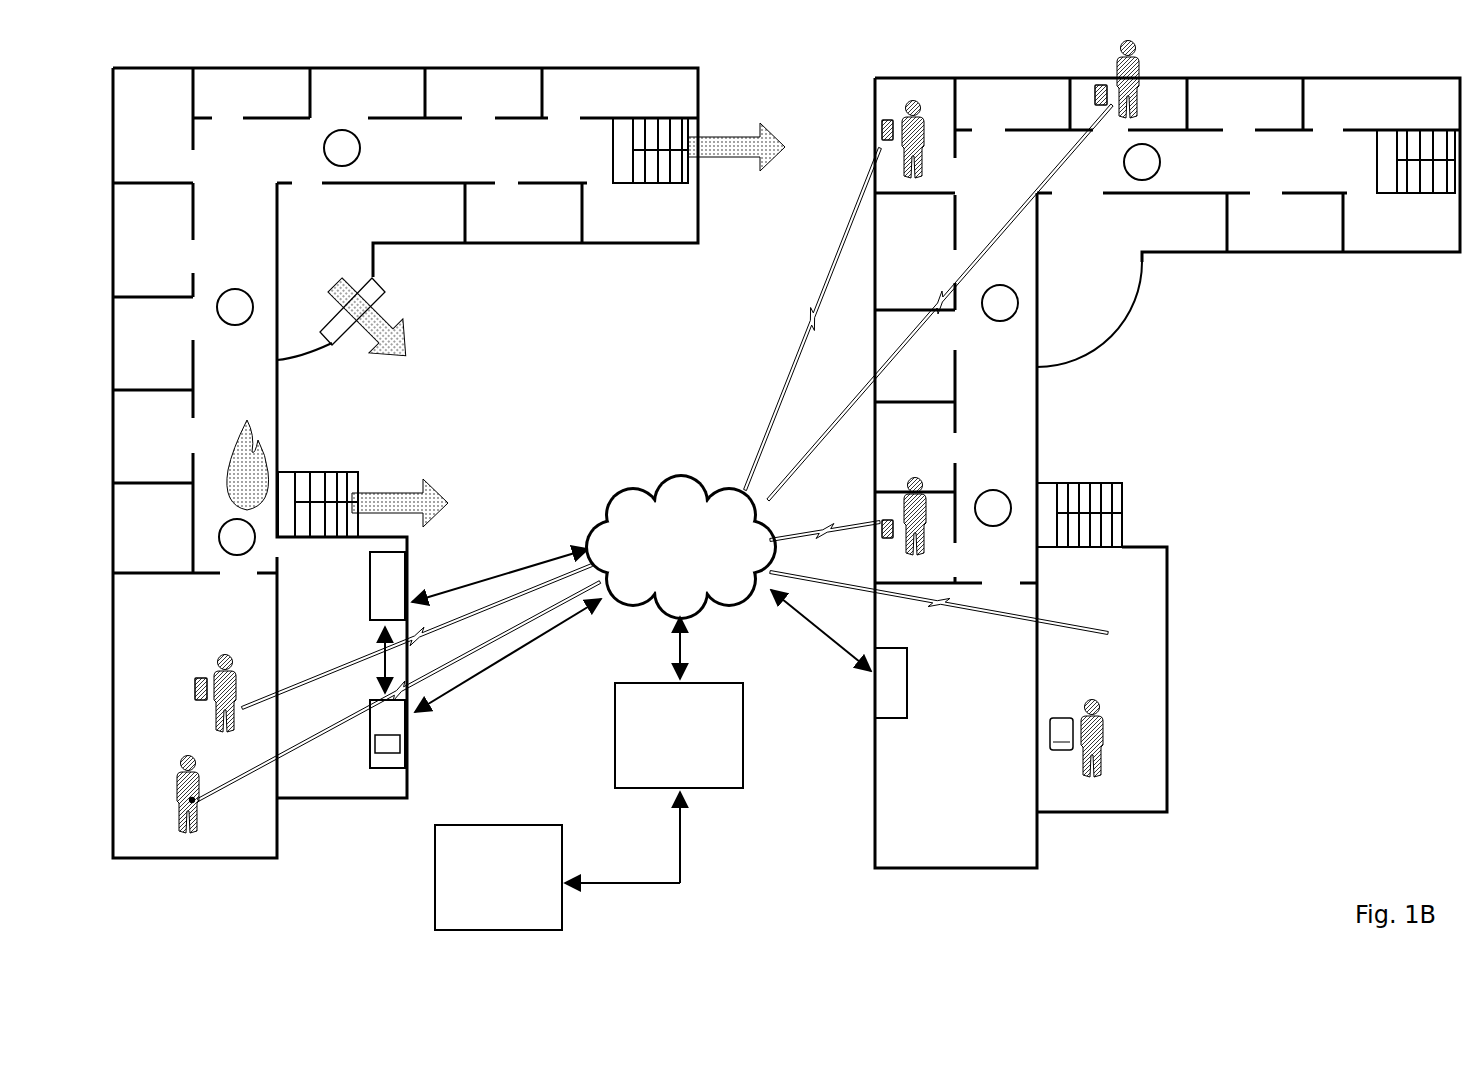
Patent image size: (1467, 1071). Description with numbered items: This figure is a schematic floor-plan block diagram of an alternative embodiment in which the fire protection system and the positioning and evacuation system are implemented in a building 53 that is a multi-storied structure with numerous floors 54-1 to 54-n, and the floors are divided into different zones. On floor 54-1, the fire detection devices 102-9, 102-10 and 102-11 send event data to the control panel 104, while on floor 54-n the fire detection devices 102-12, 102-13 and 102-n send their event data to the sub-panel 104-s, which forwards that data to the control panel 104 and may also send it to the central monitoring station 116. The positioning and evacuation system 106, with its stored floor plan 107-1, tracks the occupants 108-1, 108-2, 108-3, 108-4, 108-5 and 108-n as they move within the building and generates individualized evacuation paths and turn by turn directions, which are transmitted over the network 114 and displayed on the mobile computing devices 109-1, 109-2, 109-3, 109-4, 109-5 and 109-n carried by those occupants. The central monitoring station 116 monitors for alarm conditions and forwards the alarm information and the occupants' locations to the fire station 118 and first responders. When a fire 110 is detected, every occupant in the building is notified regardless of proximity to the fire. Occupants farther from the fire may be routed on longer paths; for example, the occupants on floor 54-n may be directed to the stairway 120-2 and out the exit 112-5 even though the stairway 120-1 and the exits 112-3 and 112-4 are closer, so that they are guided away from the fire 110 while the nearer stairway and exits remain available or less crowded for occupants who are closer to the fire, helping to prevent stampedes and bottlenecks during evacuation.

The building 53 is at (283, 849).
The floor 1 54-1 is at (176, 66).
The floor n 54-n is at (943, 77).
The fire detection device 102-9 is at (360, 148).
The fire detection device 102-10 is at (252, 298).
The fire detection device 102-11 is at (219, 539).
The fire detection device 102-12 is at (999, 492).
The fire detection device 102-13 is at (1015, 285).
The fire detection device 102-n is at (1161, 162).
The control panel 104 is at (370, 603).
The sub-panel 104-s is at (908, 697).
The positioning and evacuation system 106 is at (370, 715).
The floor plan 107-1 is at (384, 757).
The occupant 108-1 is at (225, 650).
The occupant 108-2 is at (188, 752).
The occupant 108-3 is at (1091, 699).
The occupant 108-4 is at (912, 478).
The occupant 108-5 is at (906, 100).
The occupant 108-n is at (1121, 50).
The mobile computing device 109-1 is at (199, 677).
The mobile computing device 109-2 is at (192, 800).
The mobile computing device 109-3 is at (1056, 718).
The mobile computing device 109-4 is at (888, 520).
The mobile computing device 109-5 is at (885, 120).
The mobile computing device 109-n is at (1101, 85).
The fire 110 is at (223, 472).
The exit 112-3 is at (410, 348).
The exit 112-4 is at (448, 492).
The exit 112-5 is at (762, 172).
The network 114 is at (681, 547).
The central monitoring station 116 is at (679, 735).
The fire station 118 is at (498, 877).
The stairway 120-1 is at (353, 472).
The stairway 120-2 is at (613, 150).